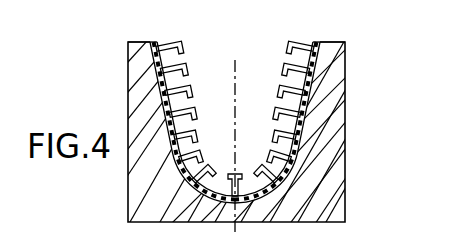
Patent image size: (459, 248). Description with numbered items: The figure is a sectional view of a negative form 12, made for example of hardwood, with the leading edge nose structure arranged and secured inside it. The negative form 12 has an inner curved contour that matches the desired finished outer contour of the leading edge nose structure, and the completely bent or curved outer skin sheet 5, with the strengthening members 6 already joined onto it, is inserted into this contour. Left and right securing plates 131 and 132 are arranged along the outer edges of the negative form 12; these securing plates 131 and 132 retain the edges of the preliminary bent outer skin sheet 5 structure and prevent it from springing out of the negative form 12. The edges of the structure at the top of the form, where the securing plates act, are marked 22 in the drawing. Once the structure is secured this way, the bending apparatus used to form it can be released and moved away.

The negative form 12 is at (327, 166).
The left securing plate 131 is at (148, 42).
The right securing plate 132 is at (322, 42).
The band edge 22 is at (141, 37).
The strengthening members 6 is at (183, 110).
The outer skin sheet 5 is at (290, 104).